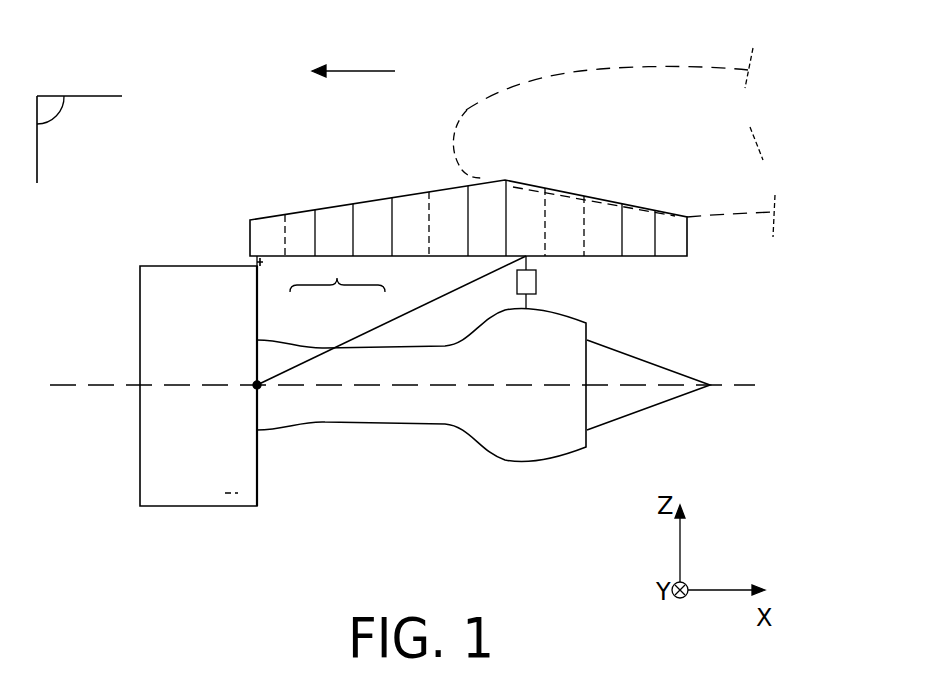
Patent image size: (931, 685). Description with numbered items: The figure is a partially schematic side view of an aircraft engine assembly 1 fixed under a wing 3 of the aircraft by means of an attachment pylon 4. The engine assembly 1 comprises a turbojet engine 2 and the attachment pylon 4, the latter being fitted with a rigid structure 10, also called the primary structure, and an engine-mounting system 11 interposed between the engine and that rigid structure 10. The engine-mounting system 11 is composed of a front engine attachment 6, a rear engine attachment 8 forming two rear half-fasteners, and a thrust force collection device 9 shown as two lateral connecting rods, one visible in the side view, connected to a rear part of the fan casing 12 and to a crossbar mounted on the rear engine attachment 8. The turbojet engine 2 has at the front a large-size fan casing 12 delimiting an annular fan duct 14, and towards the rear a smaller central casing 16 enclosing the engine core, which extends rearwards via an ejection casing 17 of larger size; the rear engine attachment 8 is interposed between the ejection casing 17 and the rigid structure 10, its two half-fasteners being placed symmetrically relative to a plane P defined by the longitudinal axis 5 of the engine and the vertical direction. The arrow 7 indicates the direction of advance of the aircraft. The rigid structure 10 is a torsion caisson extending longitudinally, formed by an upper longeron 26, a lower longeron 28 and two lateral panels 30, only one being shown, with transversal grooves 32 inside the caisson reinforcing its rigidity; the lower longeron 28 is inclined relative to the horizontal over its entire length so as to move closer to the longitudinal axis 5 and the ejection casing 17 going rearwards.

The aircraft engine assembly 1 is at (394, 367).
The turbojet engine 2 is at (200, 508).
The wing 3 is at (515, 83).
The attachment pylon 4 is at (320, 197).
The longitudinal axis 5 is at (62, 388).
The front engine attachment 6 is at (263, 266).
The arrow 7 is at (350, 68).
The rear engine attachment 8 is at (517, 289).
The thrust force collection device 9 is at (366, 331).
The rigid structure 10 is at (392, 197).
The engine-mounting system 11 is at (337, 273).
The fan casing 12 is at (150, 508).
The annular fan duct 14 is at (245, 493).
The central casing 16 is at (358, 425).
The ejection casing 17 is at (527, 457).
The upper longeron 26 is at (447, 182).
The lower longeron 28 is at (620, 258).
The lateral panels 30 is at (297, 212).
The transversal grooves 32 is at (585, 220).
The plane P is at (51, 97).